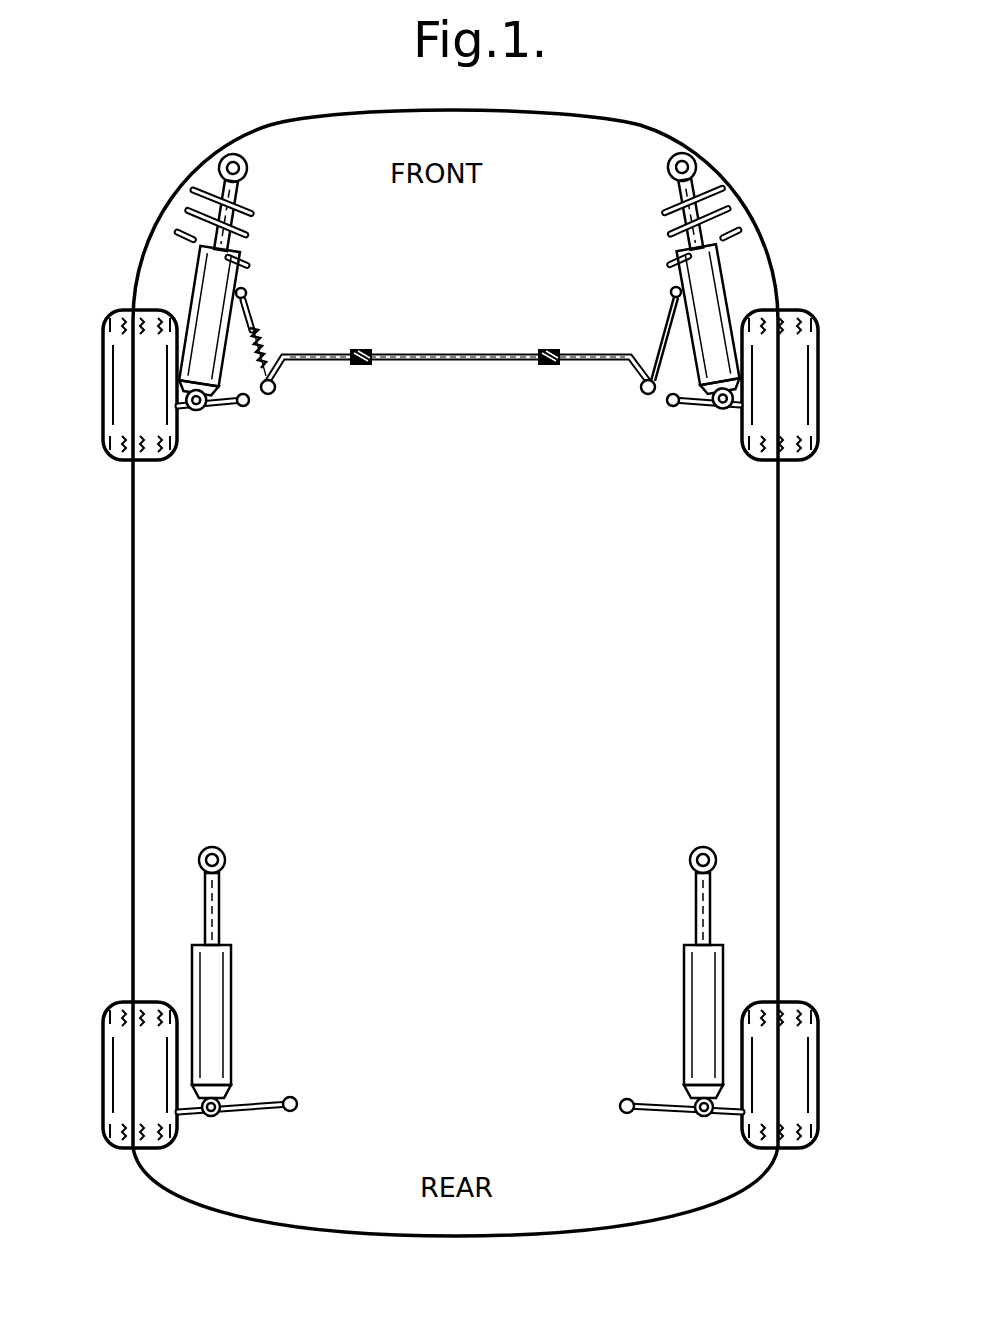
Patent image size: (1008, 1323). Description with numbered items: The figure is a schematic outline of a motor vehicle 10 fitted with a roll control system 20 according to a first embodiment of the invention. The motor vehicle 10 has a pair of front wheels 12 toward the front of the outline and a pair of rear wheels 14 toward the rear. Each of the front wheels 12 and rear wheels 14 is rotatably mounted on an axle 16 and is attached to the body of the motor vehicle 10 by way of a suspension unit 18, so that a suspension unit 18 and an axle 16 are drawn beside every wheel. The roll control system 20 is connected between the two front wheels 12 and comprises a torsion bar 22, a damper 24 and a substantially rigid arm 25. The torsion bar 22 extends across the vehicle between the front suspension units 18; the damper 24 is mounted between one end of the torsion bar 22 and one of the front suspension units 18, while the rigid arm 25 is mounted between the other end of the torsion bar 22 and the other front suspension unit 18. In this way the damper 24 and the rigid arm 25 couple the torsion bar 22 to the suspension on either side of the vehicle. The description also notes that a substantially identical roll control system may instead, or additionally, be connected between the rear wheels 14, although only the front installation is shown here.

The motor vehicle 10 is at (790, 811).
The front wheels 12 is at (128, 388).
The rear wheels 14 is at (128, 1082).
The axle 16 is at (222, 410).
The suspension unit 18 is at (197, 298).
The roll control system 20 is at (458, 285).
The torsion bar 22 is at (405, 355).
The damper 24 is at (254, 312).
The rigid arm 25 is at (673, 300).